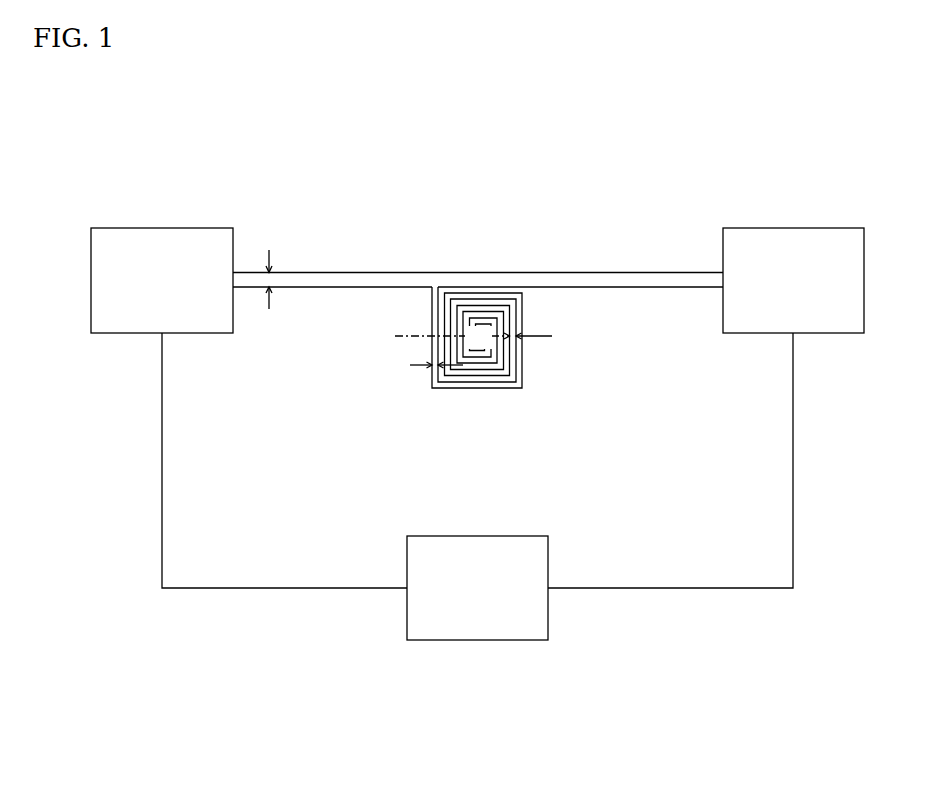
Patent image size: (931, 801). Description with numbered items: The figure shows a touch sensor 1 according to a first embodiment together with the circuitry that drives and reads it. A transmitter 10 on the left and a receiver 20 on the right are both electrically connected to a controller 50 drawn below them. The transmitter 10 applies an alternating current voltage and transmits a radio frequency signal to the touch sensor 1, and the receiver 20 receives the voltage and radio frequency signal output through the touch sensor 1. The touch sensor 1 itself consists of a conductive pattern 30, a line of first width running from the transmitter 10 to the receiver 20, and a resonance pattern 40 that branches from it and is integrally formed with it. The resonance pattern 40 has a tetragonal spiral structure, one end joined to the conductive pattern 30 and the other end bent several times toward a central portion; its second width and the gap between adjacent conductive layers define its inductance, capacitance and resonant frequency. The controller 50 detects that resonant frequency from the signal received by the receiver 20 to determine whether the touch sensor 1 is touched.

The touch sensor 1 is at (487, 156).
The transmitter 10 is at (150, 228).
The receiver 20 is at (790, 228).
The conductive pattern 30 is at (325, 288).
The resonance pattern 40 is at (465, 388).
The controller 50 is at (493, 640).